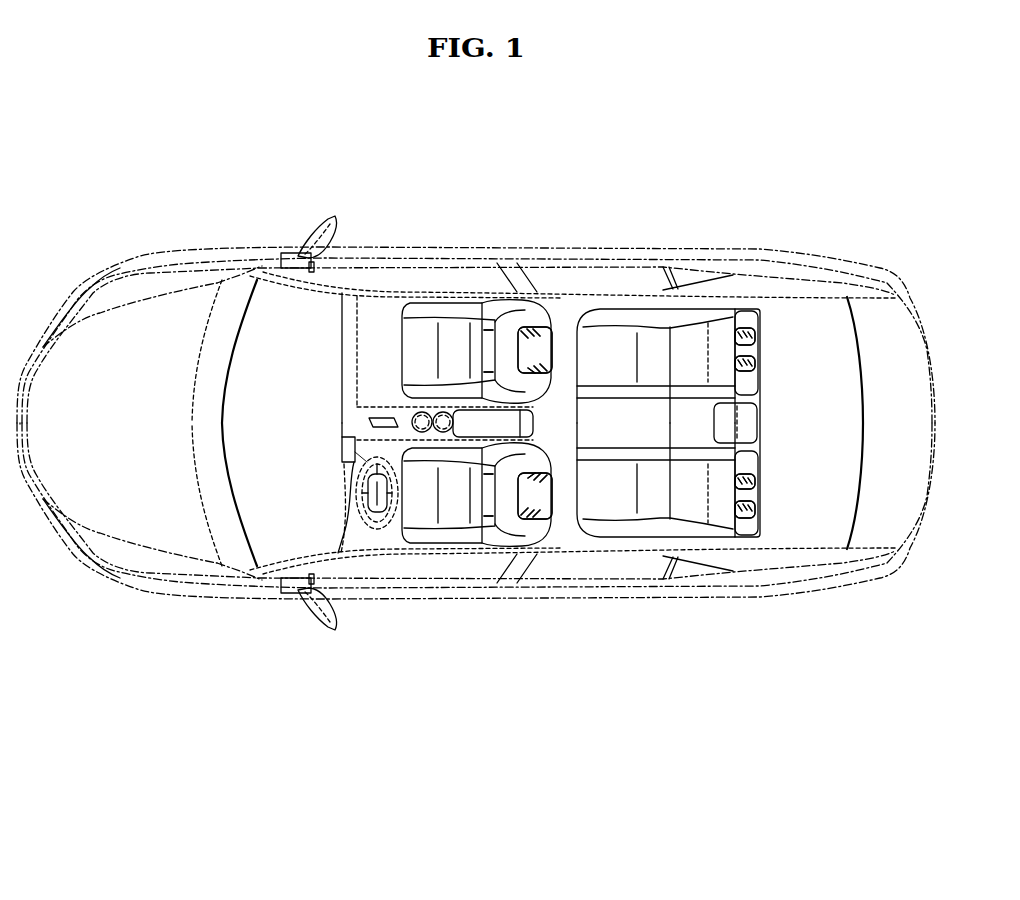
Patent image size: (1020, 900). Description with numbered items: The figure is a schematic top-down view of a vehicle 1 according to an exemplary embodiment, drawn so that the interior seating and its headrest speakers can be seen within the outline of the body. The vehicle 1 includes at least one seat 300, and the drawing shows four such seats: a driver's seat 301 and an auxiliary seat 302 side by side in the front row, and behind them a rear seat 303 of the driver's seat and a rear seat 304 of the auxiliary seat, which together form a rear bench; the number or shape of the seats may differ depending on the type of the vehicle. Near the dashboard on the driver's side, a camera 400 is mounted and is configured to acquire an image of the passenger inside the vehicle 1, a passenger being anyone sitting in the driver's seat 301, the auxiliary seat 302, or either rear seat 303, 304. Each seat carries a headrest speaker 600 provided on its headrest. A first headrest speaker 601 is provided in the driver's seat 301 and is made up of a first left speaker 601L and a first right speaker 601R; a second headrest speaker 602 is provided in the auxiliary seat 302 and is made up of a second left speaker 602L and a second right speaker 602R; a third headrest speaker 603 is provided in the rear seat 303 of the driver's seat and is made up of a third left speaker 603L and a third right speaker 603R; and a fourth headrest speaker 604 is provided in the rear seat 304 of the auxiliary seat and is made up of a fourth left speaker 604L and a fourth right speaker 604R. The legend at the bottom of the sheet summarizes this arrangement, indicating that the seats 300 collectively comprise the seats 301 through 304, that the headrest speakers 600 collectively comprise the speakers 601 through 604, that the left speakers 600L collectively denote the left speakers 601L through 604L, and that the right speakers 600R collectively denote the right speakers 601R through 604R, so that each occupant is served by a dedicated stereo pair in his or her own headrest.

The vehicle 1 is at (128, 316).
The seat 300 is at (493, 482).
The driver's seat 301 is at (405, 543).
The auxiliary seat 302 is at (408, 303).
The rear seat of the driver's seat 303 is at (675, 530).
The rear seat of the auxiliary seat 304 is at (660, 315).
The camera 400 is at (342, 450).
The headrest speaker 600 is at (534, 458).
The left speakers 600L is at (490, 580).
The right speakers 600R is at (490, 595).
The first headrest speaker 601 is at (533, 708).
The first left speaker 601L is at (548, 404).
The first right speaker 601R is at (507, 543).
The second headrest speaker 602 is at (538, 125).
The second left speaker 602L is at (522, 326).
The second right speaker 602R is at (544, 327).
The third headrest speaker 603 is at (777, 708).
The third left speaker 603L is at (738, 519).
The third right speaker 603R is at (756, 482).
The fourth headrest speaker 604 is at (778, 135).
The fourth left speaker 604L is at (756, 364).
The fourth right speaker 604R is at (743, 328).